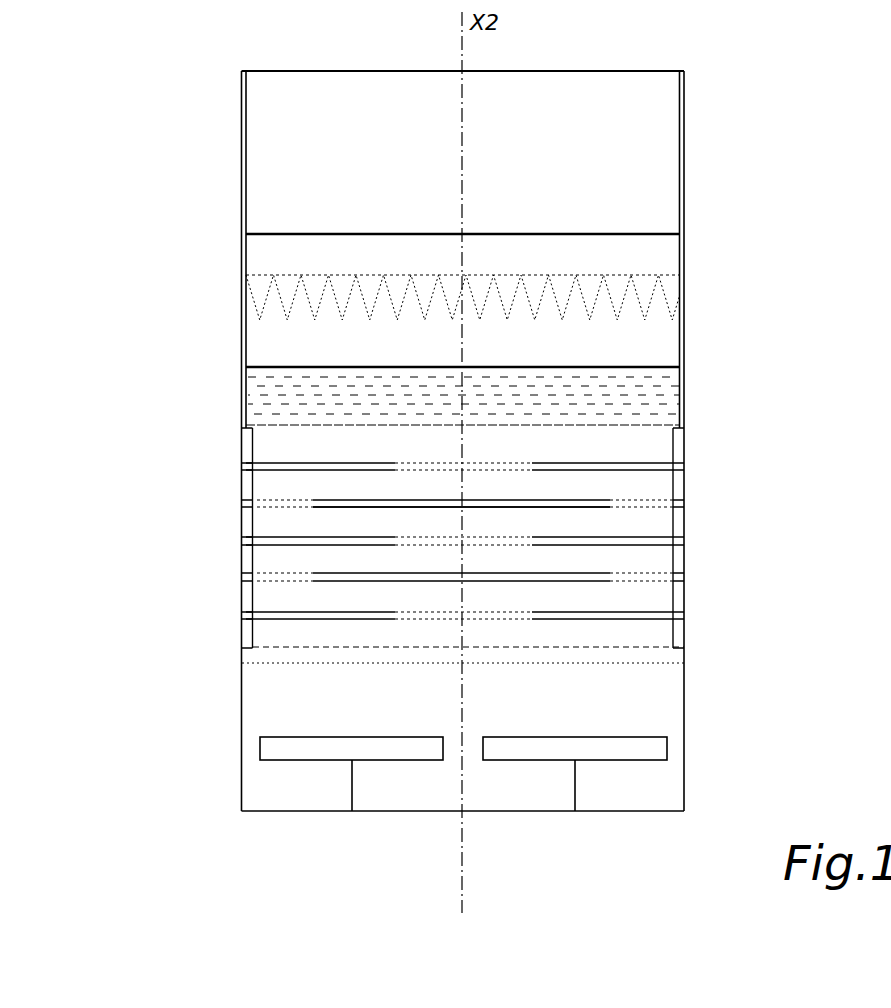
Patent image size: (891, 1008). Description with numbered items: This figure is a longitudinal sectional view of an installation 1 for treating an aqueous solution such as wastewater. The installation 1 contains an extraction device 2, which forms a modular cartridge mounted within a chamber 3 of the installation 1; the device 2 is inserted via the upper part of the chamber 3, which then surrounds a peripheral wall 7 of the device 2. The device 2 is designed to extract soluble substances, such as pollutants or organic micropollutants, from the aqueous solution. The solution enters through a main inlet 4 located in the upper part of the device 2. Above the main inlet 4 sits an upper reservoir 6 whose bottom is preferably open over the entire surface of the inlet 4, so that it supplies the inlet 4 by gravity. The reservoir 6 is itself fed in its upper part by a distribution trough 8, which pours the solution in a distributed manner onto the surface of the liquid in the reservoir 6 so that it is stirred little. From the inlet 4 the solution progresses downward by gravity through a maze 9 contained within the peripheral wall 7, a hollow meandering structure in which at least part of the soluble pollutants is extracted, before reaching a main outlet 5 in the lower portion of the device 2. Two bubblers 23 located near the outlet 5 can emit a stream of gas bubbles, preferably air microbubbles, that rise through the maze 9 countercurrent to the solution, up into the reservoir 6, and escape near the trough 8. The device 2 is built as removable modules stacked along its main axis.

The installation 1 is at (212, 160).
The extraction device 2 is at (275, 558).
The chamber 3 is at (241, 320).
The main inlet 4 is at (637, 425).
The main outlet 5 is at (636, 663).
The upper reservoir 6 is at (612, 390).
The peripheral wall 7 is at (677, 521).
The distribution trough 8 is at (585, 272).
The maze 9 is at (575, 525).
The bubblers 23 is at (525, 752).